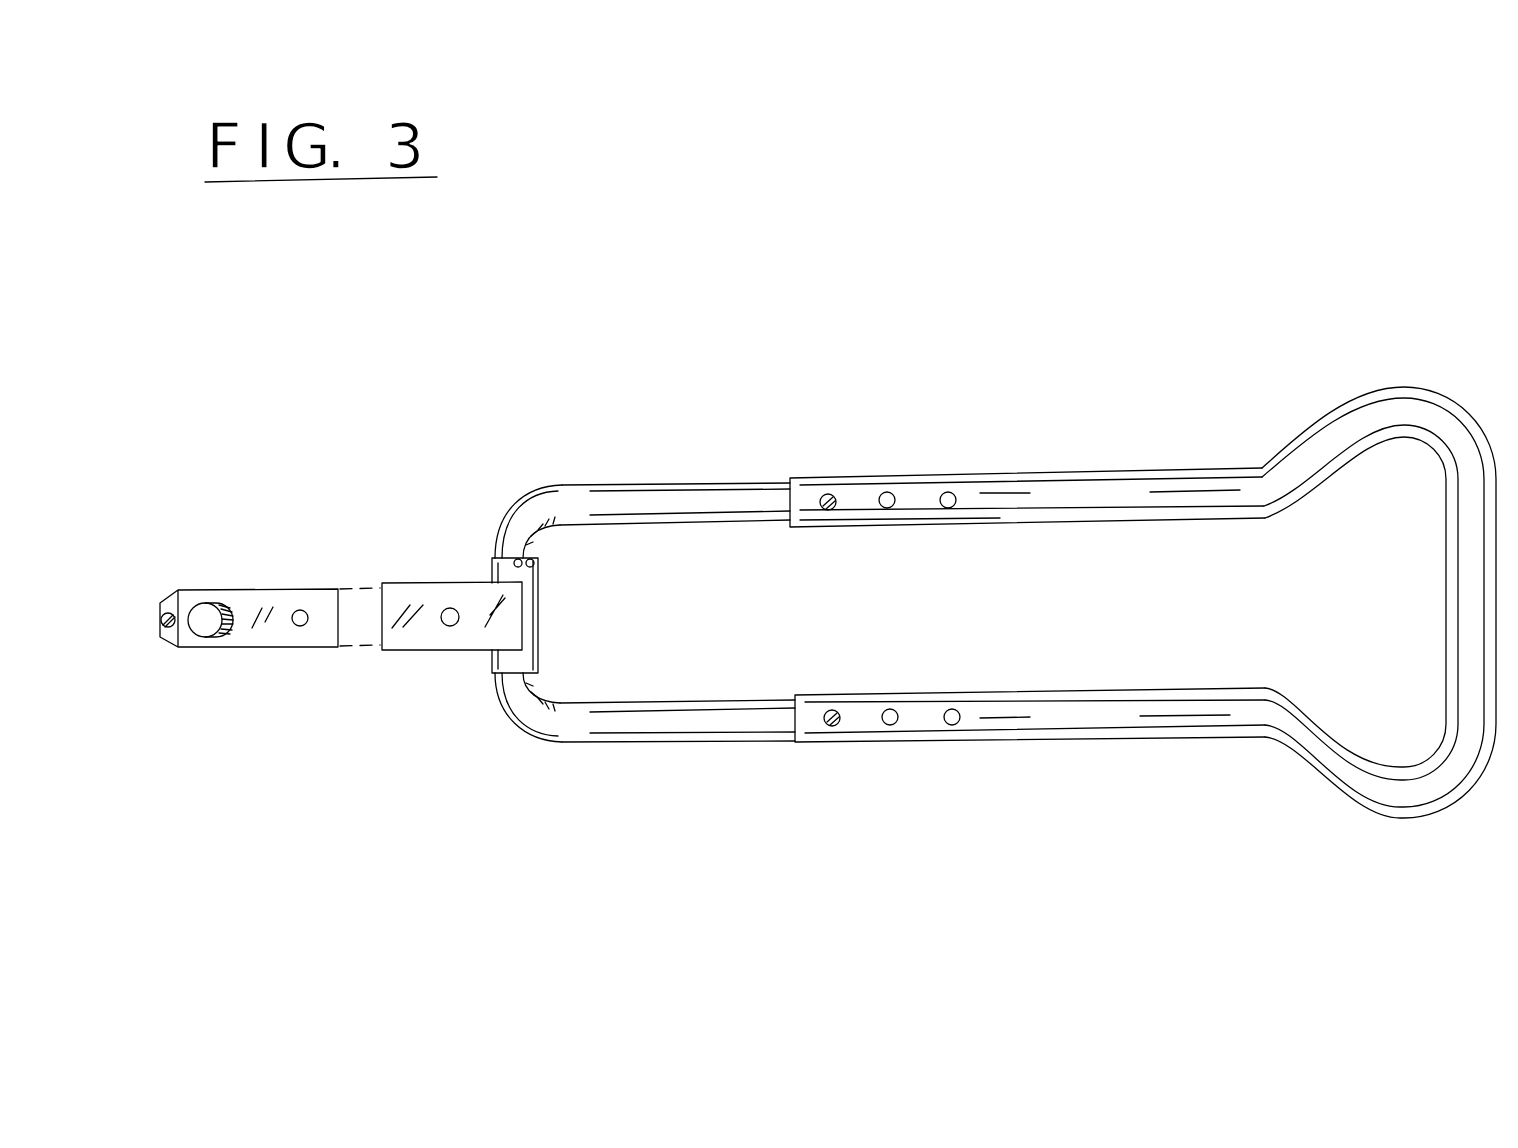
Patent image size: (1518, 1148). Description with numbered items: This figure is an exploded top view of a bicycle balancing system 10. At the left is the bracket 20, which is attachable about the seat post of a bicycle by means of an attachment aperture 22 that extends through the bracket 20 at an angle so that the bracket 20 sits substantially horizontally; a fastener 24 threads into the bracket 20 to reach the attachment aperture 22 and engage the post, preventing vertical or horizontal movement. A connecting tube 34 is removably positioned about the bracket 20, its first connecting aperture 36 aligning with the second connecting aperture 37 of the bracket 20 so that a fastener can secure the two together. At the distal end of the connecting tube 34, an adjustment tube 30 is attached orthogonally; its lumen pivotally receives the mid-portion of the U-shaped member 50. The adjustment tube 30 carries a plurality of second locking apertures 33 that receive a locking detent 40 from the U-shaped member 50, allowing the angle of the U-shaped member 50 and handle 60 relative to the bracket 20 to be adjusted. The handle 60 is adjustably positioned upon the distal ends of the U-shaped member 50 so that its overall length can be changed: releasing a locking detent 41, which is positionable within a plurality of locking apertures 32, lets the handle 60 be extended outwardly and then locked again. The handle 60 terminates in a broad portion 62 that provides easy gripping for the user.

The bicycle balancing system 10 is at (1150, 189).
The bracket 20 is at (270, 565).
The attachment aperture 22 is at (204, 630).
The fastener 24 is at (155, 600).
The adjustment tube 30 is at (520, 670).
The locking apertures 32 is at (886, 493).
The second locking apertures 33 is at (553, 553).
The connecting tube 34 is at (398, 650).
The first connecting aperture 36 is at (453, 622).
The second connecting aperture 37 is at (298, 645).
The locking detent 40 is at (500, 553).
The locking detent 41 is at (826, 498).
The U-shaped member 50 is at (665, 500).
The handle 60 is at (1205, 490).
The broad portion 62 is at (1417, 412).